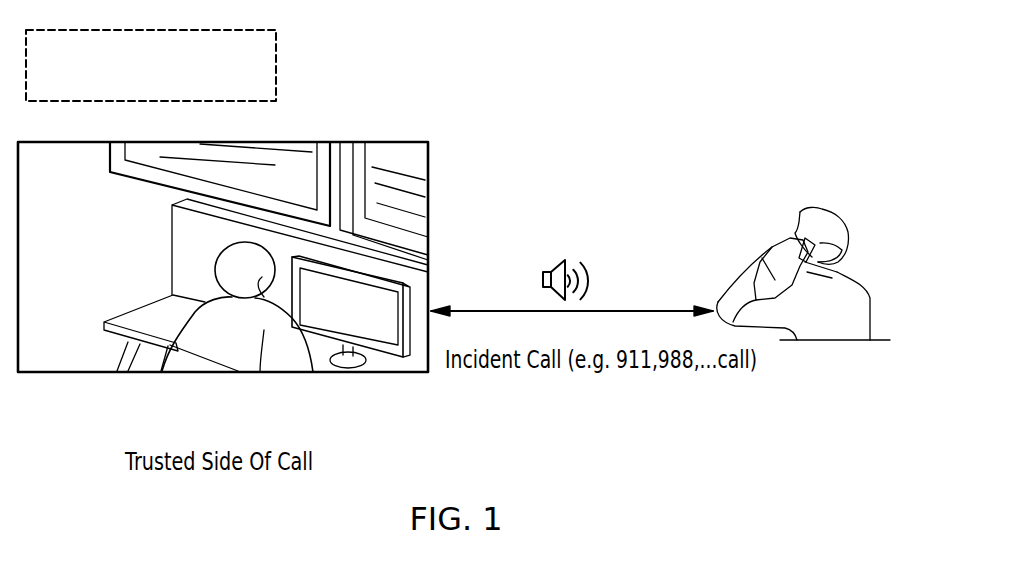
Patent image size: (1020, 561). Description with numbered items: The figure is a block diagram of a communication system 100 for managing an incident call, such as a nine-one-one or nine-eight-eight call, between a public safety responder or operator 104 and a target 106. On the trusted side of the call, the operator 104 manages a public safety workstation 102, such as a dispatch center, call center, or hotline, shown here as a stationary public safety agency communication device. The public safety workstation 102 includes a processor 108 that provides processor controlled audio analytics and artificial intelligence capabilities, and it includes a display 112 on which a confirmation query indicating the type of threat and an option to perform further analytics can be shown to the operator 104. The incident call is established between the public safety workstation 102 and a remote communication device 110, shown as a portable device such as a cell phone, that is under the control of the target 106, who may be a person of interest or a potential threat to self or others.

The communication system 100 is at (771, 102).
The public safety workstation 102 is at (428, 160).
The public safety responder/operator 104 is at (242, 361).
The target 106 is at (862, 366).
The processor 108 is at (278, 70).
The remote communication device 110 is at (840, 254).
The display 112 is at (369, 317).